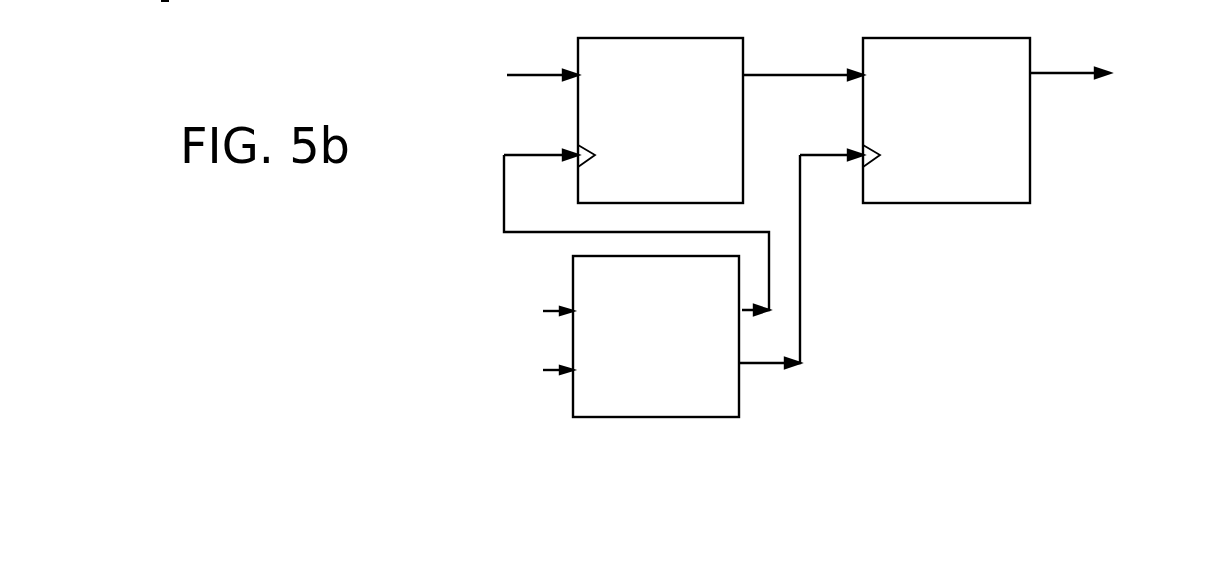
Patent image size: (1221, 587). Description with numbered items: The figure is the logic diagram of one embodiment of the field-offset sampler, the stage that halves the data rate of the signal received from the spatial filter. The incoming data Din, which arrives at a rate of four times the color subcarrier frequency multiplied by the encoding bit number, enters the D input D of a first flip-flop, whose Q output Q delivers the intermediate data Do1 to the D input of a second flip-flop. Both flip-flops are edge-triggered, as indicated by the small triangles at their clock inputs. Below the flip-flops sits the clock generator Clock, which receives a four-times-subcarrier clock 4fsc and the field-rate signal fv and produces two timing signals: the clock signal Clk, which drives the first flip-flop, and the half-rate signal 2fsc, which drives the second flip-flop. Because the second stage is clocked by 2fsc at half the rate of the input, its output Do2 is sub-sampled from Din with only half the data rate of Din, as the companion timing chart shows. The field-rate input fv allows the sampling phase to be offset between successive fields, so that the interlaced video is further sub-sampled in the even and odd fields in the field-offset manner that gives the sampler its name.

The D input D is at (660, 120).
The Q output Q is at (868, 120).
The clock generator Clock is at (656, 336).
The input data Din is at (512, 76).
The clock signal Clk is at (604, 225).
The first output data Do1 is at (803, 56).
The 2fsc clock signal 2fsc is at (892, 225).
The output data Do2 is at (1111, 75).
The 4fsc clock input 4fsc is at (531, 310).
The field frequency input fv is at (540, 369).